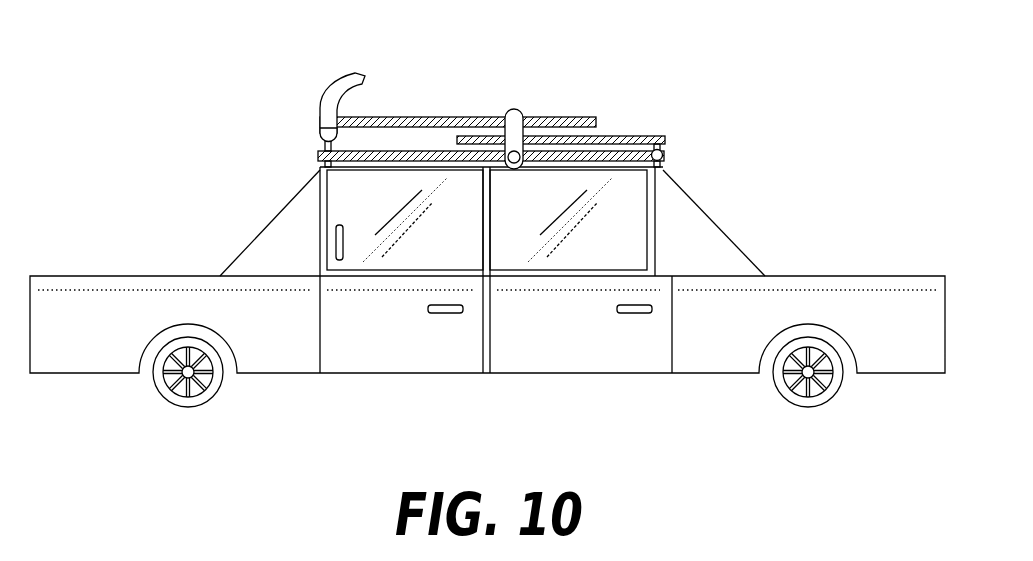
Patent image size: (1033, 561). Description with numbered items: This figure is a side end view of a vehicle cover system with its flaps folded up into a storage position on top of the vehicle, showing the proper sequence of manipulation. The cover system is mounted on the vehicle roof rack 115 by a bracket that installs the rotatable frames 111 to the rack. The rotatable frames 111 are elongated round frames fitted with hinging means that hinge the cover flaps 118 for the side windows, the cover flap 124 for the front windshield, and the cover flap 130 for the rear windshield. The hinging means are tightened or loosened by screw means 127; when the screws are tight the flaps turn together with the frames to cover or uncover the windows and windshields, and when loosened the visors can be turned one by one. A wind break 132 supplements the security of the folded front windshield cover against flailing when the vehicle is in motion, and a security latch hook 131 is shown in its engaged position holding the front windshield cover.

The rotatable frame 111 is at (662, 153).
The vehicle roof rack 115 is at (661, 165).
The cover flap for side windows 118 is at (420, 151).
The cover flap for front windshield 124 is at (590, 117).
The screw means 127 is at (322, 132).
The cover flap for rear windshield 130 is at (652, 136).
The security latch hook 131 is at (513, 112).
The wind break 132 is at (321, 104).